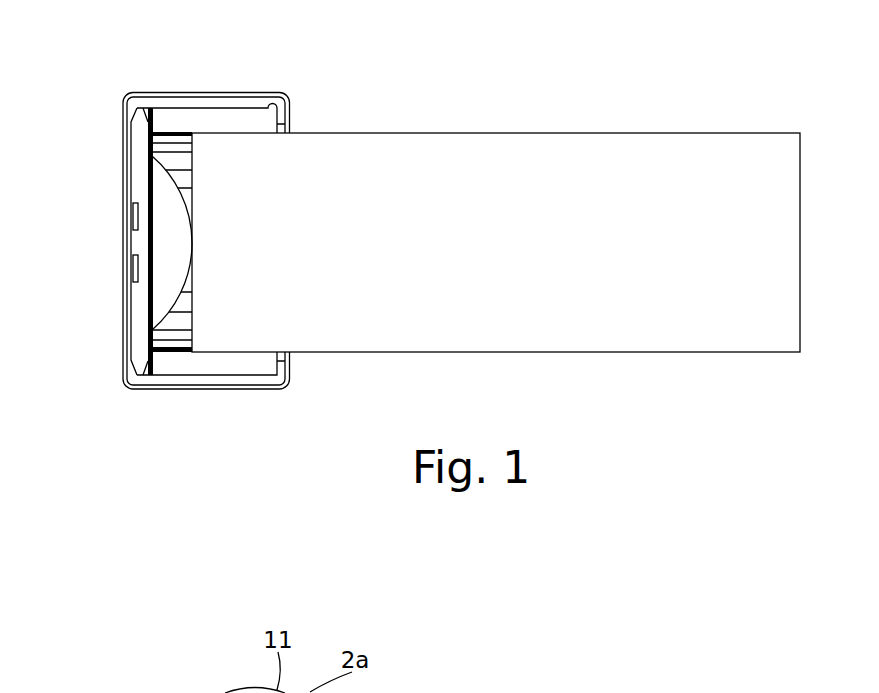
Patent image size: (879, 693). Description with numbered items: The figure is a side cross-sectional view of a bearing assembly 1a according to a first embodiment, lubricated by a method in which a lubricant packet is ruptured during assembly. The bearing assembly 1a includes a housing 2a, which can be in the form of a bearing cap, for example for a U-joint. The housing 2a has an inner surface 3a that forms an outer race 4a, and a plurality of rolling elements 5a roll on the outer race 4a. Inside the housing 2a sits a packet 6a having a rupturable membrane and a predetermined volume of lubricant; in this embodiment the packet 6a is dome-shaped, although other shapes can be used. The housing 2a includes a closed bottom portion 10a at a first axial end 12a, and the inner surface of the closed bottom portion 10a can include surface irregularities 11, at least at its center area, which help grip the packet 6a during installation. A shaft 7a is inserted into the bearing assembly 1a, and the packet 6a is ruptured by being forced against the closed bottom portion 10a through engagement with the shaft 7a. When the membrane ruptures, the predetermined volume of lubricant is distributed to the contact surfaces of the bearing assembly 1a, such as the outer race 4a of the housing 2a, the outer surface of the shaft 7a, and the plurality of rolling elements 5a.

The bearing assembly 1a is at (459, 124).
The housing 2a is at (212, 396).
The inner surface 3a is at (245, 104).
The outer race 4a is at (170, 107).
The rolling elements 5a is at (197, 363).
The packet 6a is at (158, 194).
The shaft 7a is at (689, 158).
The closed bottom portion 10a is at (147, 141).
The surface irregularities 11 is at (148, 286).
The first axial end 12a is at (122, 388).